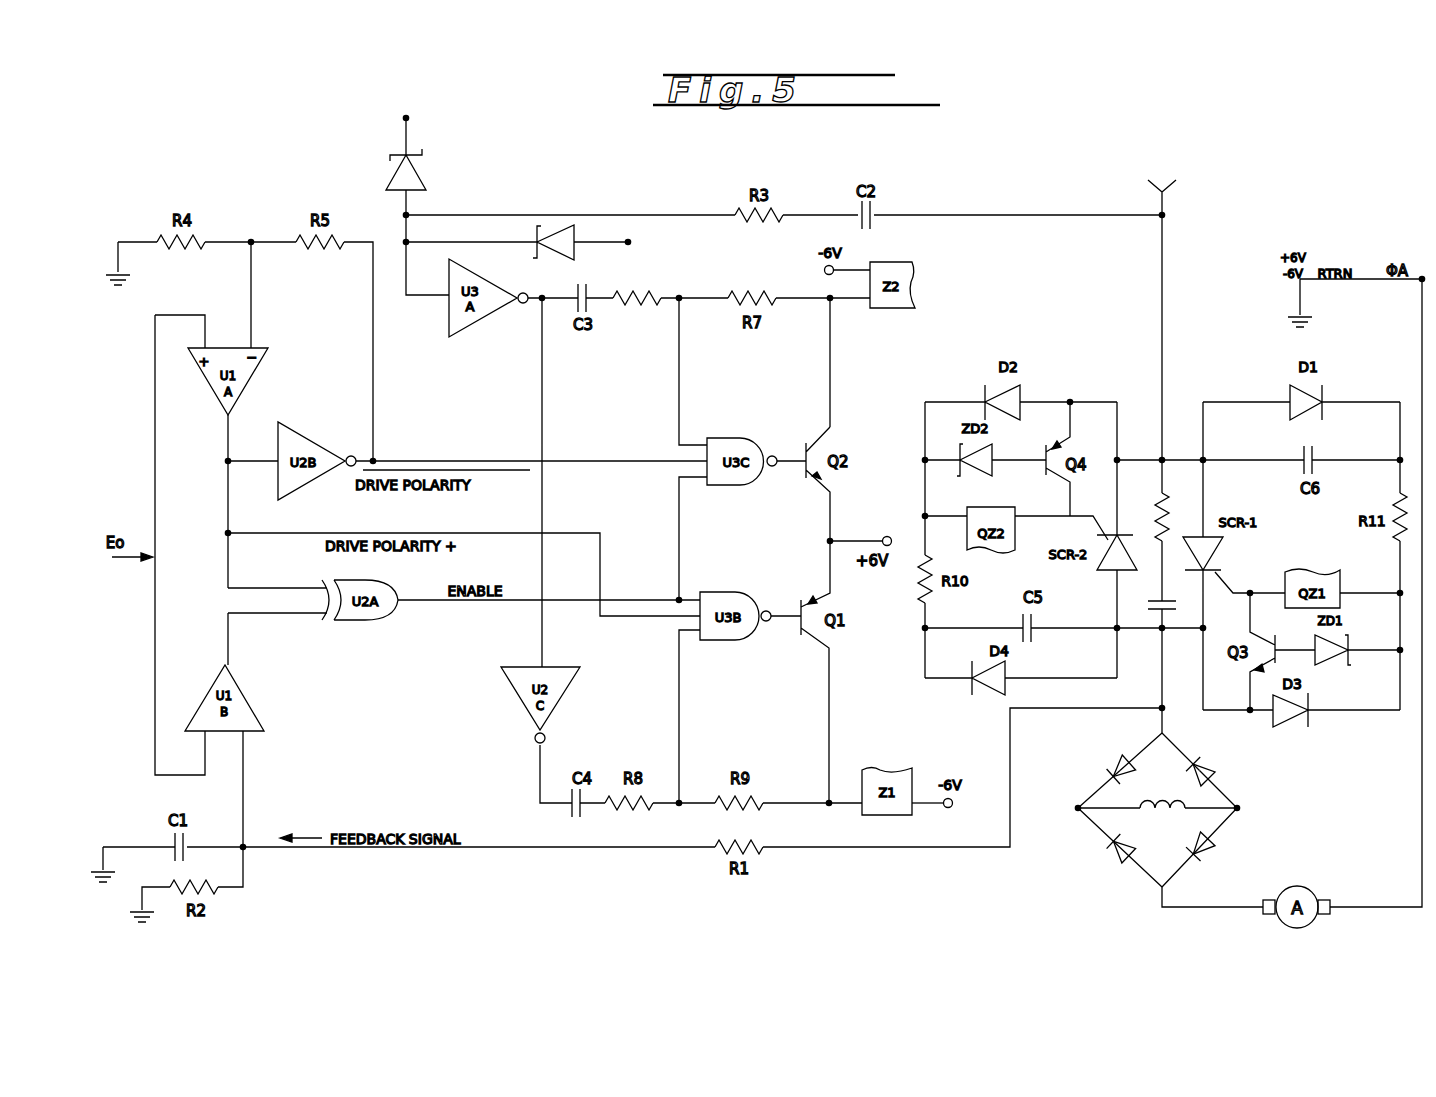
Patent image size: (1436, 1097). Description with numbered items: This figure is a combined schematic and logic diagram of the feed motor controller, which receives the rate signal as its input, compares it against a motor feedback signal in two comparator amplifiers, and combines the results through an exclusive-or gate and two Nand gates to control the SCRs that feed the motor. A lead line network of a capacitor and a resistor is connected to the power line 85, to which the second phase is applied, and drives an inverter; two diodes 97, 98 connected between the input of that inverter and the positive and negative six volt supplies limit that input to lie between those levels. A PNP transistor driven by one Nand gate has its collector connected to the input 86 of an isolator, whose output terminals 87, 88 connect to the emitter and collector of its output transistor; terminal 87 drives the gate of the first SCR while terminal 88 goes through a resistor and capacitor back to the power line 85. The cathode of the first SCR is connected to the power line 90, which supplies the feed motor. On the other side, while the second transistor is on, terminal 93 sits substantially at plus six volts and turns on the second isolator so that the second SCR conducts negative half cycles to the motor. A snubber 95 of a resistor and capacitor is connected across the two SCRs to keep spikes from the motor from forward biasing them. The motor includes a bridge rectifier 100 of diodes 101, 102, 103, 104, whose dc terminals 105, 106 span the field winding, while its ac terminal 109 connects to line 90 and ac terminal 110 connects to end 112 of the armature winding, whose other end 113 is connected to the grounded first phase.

The power line 85 is at (1163, 204).
The input of isolator Z1 86 is at (829, 800).
The output terminal of isolator Z1 87 is at (1252, 590).
The output terminal of isolator Z1 88 is at (1398, 590).
The power line 90 is at (1165, 690).
The terminal 93 is at (836, 303).
The snubber circuit 95 is at (1143, 517).
The diode 97 is at (420, 172).
The diode 98 is at (568, 225).
The bridge rectifier 100 is at (1182, 803).
The diode 101 is at (1107, 771).
The diode 102 is at (1115, 860).
The diode 103 is at (1215, 848).
The diode 104 is at (1213, 775).
The dc terminal 105 is at (1078, 808).
The dc terminal 106 is at (1240, 812).
The ac terminal 109 is at (1158, 732).
The ac terminal 110 is at (1158, 889).
The end of armature winding 112 is at (1268, 915).
The end of armature winding 113 is at (1322, 915).